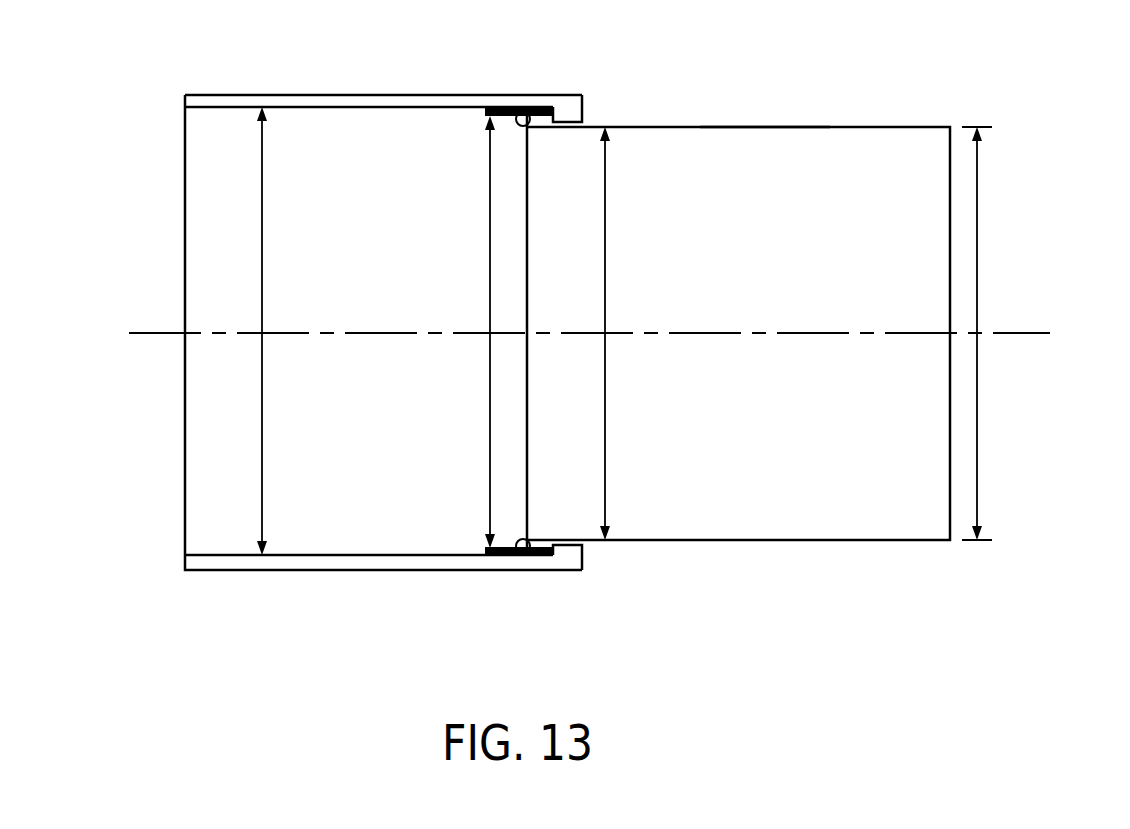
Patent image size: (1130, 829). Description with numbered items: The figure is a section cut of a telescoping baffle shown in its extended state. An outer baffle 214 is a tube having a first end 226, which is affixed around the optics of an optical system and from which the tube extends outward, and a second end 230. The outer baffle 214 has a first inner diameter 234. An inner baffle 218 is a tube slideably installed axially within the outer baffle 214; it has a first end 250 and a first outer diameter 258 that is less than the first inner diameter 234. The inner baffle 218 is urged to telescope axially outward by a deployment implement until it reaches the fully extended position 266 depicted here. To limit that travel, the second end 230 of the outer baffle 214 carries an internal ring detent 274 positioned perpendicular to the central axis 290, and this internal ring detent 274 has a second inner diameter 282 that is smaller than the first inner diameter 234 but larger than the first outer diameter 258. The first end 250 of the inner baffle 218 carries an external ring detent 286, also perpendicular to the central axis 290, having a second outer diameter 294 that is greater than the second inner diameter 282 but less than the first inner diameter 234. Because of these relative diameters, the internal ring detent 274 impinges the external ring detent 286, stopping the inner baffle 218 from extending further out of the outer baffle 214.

The outer baffle 214 is at (275, 94).
The first end 226 is at (183, 570).
The second end 230 is at (585, 94).
The external ring detent 286 is at (513, 110).
The internal ring detent 274 is at (502, 553).
The first end 250 is at (528, 189).
The inner baffle 218 is at (855, 125).
The fully extended position 266 is at (768, 125).
The central axis 290 is at (1028, 333).
The first inner diameter 234 is at (258, 518).
The second outer diameter 294 is at (487, 513).
The second inner diameter 282 is at (608, 490).
The first outer diameter 258 is at (978, 440).